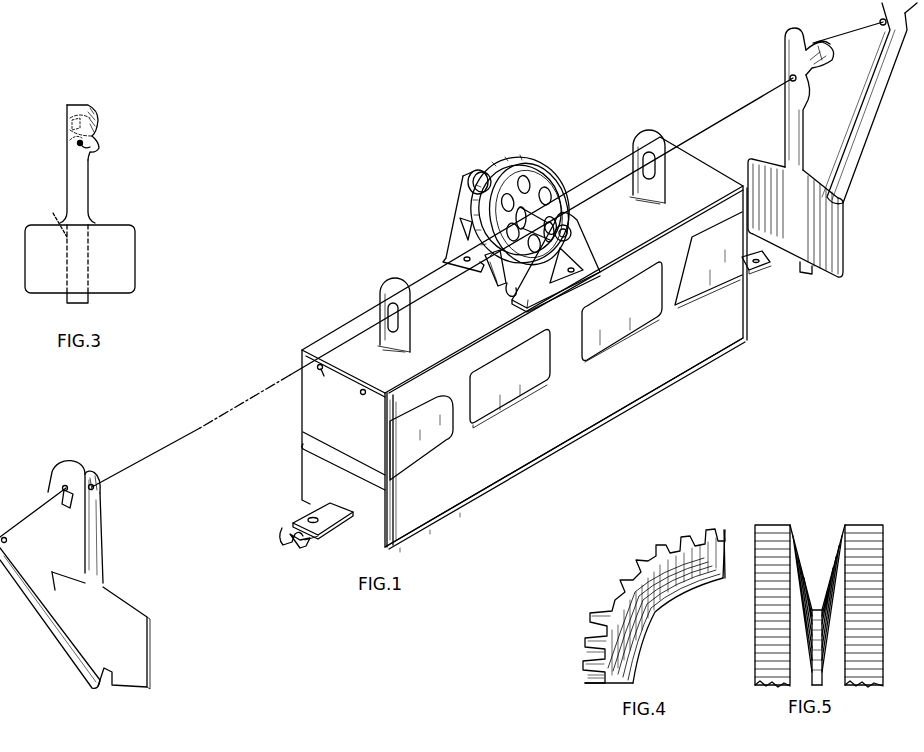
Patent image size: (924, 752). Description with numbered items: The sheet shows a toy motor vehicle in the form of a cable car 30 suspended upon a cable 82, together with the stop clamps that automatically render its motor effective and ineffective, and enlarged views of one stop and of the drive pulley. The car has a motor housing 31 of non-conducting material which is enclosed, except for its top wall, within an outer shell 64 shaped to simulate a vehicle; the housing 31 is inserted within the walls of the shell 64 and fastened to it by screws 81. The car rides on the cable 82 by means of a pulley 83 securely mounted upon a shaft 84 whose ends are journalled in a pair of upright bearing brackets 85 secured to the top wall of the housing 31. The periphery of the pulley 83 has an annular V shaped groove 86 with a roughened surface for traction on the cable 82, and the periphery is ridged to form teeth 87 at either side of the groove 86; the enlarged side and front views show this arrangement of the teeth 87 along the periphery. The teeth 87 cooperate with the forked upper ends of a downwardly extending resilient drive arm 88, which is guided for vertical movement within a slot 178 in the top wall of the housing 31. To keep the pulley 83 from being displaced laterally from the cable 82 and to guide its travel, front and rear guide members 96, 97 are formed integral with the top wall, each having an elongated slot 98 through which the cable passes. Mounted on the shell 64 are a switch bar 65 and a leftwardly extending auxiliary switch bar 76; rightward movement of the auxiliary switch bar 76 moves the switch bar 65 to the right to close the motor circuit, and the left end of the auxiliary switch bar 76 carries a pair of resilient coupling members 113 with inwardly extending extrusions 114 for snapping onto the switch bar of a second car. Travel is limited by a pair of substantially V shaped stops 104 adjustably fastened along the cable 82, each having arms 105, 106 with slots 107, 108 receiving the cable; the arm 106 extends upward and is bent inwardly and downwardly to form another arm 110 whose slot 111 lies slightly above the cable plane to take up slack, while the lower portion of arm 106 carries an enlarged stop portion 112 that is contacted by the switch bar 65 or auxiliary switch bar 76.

In FIG. 1, the cable car 30 is at (735, 350).
In FIG. 1, the motor housing 31 is at (432, 270).
In FIG. 1, the outer housing or shell 64 is at (500, 478).
In FIG. 1, the switch bar 65 is at (763, 268).
In FIG. 1, the auxiliary switch bar 76 is at (337, 510).
In FIG. 1, the screws 81 is at (361, 392).
In FIG. 1, the cable 82 is at (285, 377).
In FIG. 3, the cable 82 is at (100, 147).
In FIG. 1, the pulley 83 is at (553, 178).
In FIG. 4, the pulley 83 is at (645, 635).
In FIG. 5, the pulley 83 is at (757, 651).
In FIG. 1, the shaft 84 is at (572, 230).
In FIG. 1, the bearing brackets 85 is at (462, 210).
In FIG. 1, the annular V shaped groove 86 is at (511, 168).
In FIG. 5, the annular V shaped groove 86 is at (816, 600).
In FIG. 1, the teeth 87 is at (477, 174).
In FIG. 4, the teeth 87 is at (604, 589).
In FIG. 5, the teeth 87 is at (868, 606).
In FIG. 1, the drive arm 88 is at (488, 275).
In FIG. 1, the front guide member 96 is at (404, 318).
In FIG. 1, the rear guide member 97 is at (655, 168).
In FIG. 1, the elongated slot 98 is at (383, 298).
In FIG. 1, the stops 104 is at (453, 345).
In FIG. 3, the stops 104 is at (103, 201).
In FIG. 1, the arm 105 is at (866, 100).
In FIG. 3, the arm 105 is at (56, 221).
In FIG. 1, the arm 106 is at (784, 120).
In FIG. 3, the arm 106 is at (88, 195).
In FIG. 1, the slot 107 is at (880, 21).
In FIG. 3, the slot 107 is at (62, 138).
In FIG. 1, the slot 108 is at (790, 78).
In FIG. 3, the slot 108 is at (78, 145).
In FIG. 1, the arm 110 is at (828, 52).
In FIG. 3, the arm 110 is at (95, 112).
In FIG. 1, the slot 111 is at (824, 45).
In FIG. 3, the slot 111 is at (62, 113).
In FIG. 1, the enlarged stop portion 112 is at (798, 255).
In FIG. 3, the enlarged stop portion 112 is at (118, 262).
In FIG. 1, the coupling members 113 is at (289, 526).
In FIG. 1, the extrusions 114 is at (311, 541).
In FIG. 1, the slot 178 is at (509, 292).